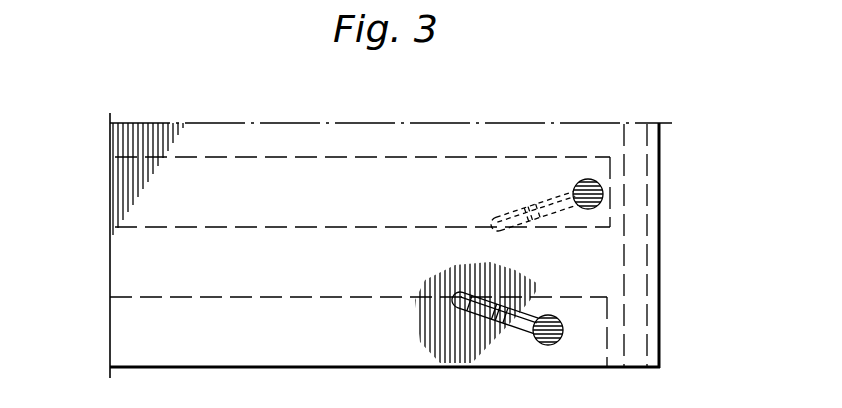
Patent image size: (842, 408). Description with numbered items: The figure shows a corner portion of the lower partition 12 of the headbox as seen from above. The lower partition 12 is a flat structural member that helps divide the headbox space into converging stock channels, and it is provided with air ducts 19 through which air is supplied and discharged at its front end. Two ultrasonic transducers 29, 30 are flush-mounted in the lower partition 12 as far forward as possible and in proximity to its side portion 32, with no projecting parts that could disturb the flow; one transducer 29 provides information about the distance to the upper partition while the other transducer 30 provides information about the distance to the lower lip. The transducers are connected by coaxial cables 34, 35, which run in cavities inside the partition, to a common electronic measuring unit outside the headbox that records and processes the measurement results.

The lower partition 12 is at (660, 240).
The air ducts 19 is at (185, 137).
The ultrasonic transducer 29 is at (586, 181).
The ultrasonic transducer 30 is at (553, 341).
The side portion 32 is at (637, 315).
The coaxial cable 34 is at (522, 206).
The coaxial cable 35 is at (483, 312).